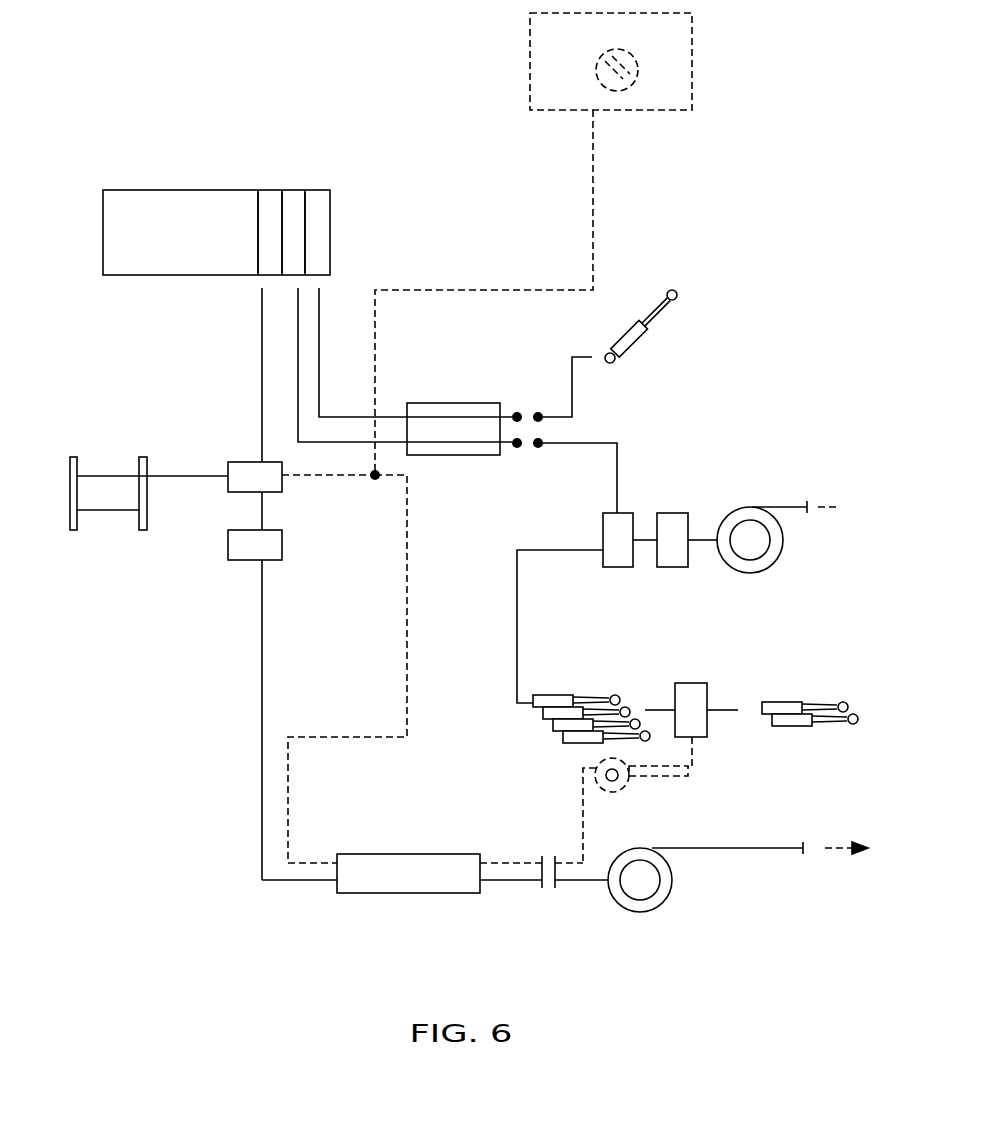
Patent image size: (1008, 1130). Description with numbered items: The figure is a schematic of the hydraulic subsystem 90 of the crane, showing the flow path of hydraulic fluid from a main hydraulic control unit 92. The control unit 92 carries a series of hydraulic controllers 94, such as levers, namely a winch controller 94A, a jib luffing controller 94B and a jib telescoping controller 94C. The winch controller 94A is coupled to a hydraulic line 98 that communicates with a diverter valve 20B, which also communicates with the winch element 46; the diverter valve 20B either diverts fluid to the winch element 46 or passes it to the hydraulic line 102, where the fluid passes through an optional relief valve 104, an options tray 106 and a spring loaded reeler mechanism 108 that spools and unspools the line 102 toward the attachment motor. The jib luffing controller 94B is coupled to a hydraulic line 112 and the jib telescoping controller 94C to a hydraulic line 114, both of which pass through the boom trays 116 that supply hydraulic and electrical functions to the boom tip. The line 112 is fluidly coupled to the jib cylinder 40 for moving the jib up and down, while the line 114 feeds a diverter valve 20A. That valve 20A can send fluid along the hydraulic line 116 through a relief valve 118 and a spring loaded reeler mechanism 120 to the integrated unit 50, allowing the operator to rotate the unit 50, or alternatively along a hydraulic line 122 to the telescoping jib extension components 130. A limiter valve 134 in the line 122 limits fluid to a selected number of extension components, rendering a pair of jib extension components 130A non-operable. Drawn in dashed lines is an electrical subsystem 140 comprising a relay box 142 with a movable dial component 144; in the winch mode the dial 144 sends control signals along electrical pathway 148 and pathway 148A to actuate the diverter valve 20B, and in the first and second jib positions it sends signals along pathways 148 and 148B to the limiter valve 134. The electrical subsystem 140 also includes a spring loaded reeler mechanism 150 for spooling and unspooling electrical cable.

The hydraulic subsystem 90 is at (125, 103).
The main hydraulic control unit 92 is at (92, 210).
The hydraulic controllers 94 is at (335, 185).
The winch controller 94A is at (266, 197).
The jib luffing controller 94B is at (292, 197).
The jib telescoping controller 94C is at (320, 197).
The hydraulic line 98 is at (262, 388).
The hydraulic line 102 is at (262, 652).
The relief valve 104 is at (246, 562).
The options tray 106 is at (405, 893).
The spring loaded reeler mechanism 108 is at (670, 895).
The hydraulic line 112 is at (298, 347).
The hydraulic line 114 is at (320, 300).
The boom trays 116 is at (463, 403).
The relief valve 118 is at (670, 568).
The spring loaded reeler mechanism 120 is at (748, 507).
The hydraulic line 122 is at (517, 610).
The jib extension components 130 is at (600, 672).
The jib extension components 130A is at (812, 698).
The limiter valve 134 is at (707, 727).
The electrical subsystem 140 is at (715, 57).
The relay box 142 is at (528, 68).
The dial component 144 is at (625, 92).
The electrical pathway 148 is at (510, 287).
The electrical pathway 148A is at (318, 482).
The electrical pathway 148B is at (408, 604).
The spring loaded reeler mechanism 150 is at (597, 765).
The diverter valve 20A is at (603, 543).
The diverter valve 20B is at (236, 494).
The jib cylinder 40 is at (638, 333).
The winch element 46 is at (100, 512).
The integrated unit 50 is at (846, 522).